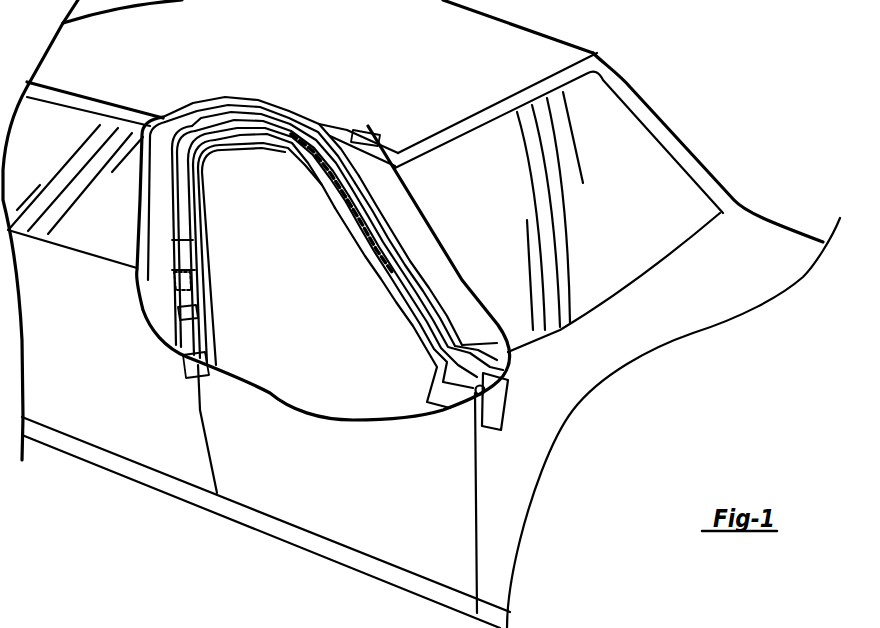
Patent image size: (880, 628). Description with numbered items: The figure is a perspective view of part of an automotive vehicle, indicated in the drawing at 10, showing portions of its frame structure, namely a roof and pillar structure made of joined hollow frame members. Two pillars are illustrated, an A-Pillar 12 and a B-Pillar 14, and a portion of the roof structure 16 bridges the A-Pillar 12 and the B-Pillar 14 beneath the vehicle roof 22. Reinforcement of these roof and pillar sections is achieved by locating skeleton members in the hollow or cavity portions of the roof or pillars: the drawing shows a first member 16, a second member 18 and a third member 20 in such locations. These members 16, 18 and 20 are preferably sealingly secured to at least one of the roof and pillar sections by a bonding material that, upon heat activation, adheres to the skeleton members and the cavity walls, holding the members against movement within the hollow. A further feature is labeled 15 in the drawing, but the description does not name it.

The vehicle body 10 is at (612, 61).
The A-Pillar 12 is at (410, 328).
The B-Pillar 14 is at (204, 184).
The roof rail inner panel 15 is at (282, 134).
The first member 16 is at (338, 190).
The second member 18 is at (195, 263).
The third member 20 is at (228, 122).
The automotive vehicle roof 22 is at (330, 130).